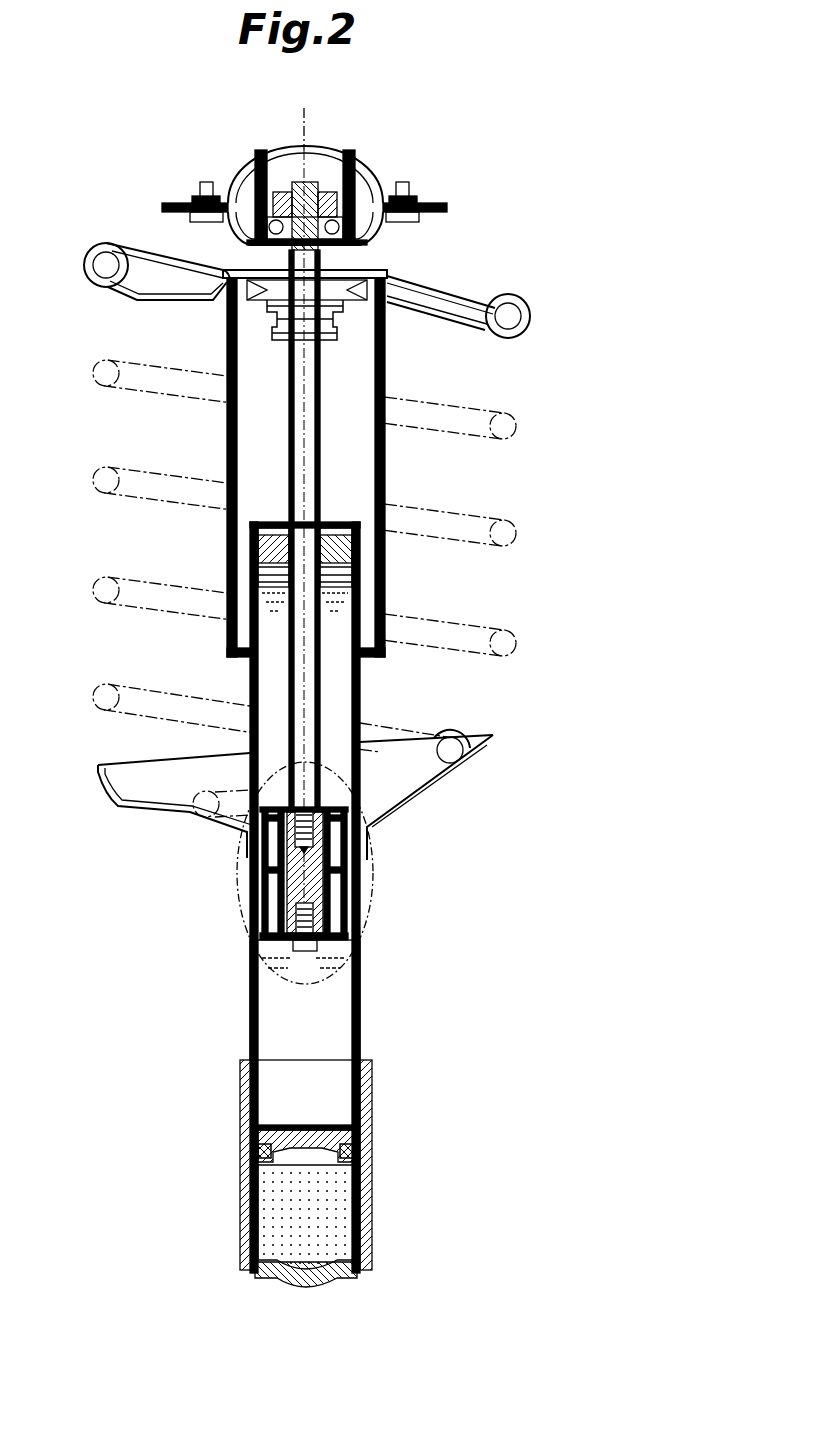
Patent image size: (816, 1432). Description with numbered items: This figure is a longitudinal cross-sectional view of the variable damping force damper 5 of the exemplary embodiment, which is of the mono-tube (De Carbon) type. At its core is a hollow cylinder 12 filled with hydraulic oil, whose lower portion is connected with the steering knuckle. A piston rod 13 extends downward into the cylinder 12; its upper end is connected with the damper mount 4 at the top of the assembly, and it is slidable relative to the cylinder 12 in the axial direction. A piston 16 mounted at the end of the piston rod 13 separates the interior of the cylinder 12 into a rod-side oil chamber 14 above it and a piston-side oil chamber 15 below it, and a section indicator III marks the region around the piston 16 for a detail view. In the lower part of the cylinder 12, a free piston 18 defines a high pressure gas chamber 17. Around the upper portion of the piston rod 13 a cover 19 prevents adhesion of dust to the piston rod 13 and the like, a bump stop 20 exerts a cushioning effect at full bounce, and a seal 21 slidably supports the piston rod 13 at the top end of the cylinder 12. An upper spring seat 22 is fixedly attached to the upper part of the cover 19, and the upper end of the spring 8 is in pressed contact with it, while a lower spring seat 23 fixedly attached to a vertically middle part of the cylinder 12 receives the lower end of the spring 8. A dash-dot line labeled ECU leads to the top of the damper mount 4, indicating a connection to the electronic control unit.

The damper mount 4 is at (232, 176).
The damper 5 is at (110, 898).
The spring 8 is at (130, 470).
The cylinder 12 is at (363, 1007).
The piston rod 13 is at (317, 438).
The rod-side oil chamber 14 is at (343, 692).
The piston-side oil chamber 15 is at (263, 1035).
The piston 16 is at (246, 877).
The high pressure gas chamber 17 is at (372, 1203).
The free piston 18 is at (350, 1125).
The cover 19 is at (227, 560).
The bump stop 20 is at (343, 318).
The seal 21 is at (337, 522).
The upper spring seat 22 is at (458, 290).
The lower spring seat 23 is at (423, 793).
The detail section indicator III is at (375, 880).
The electronic control unit ECU is at (298, 117).